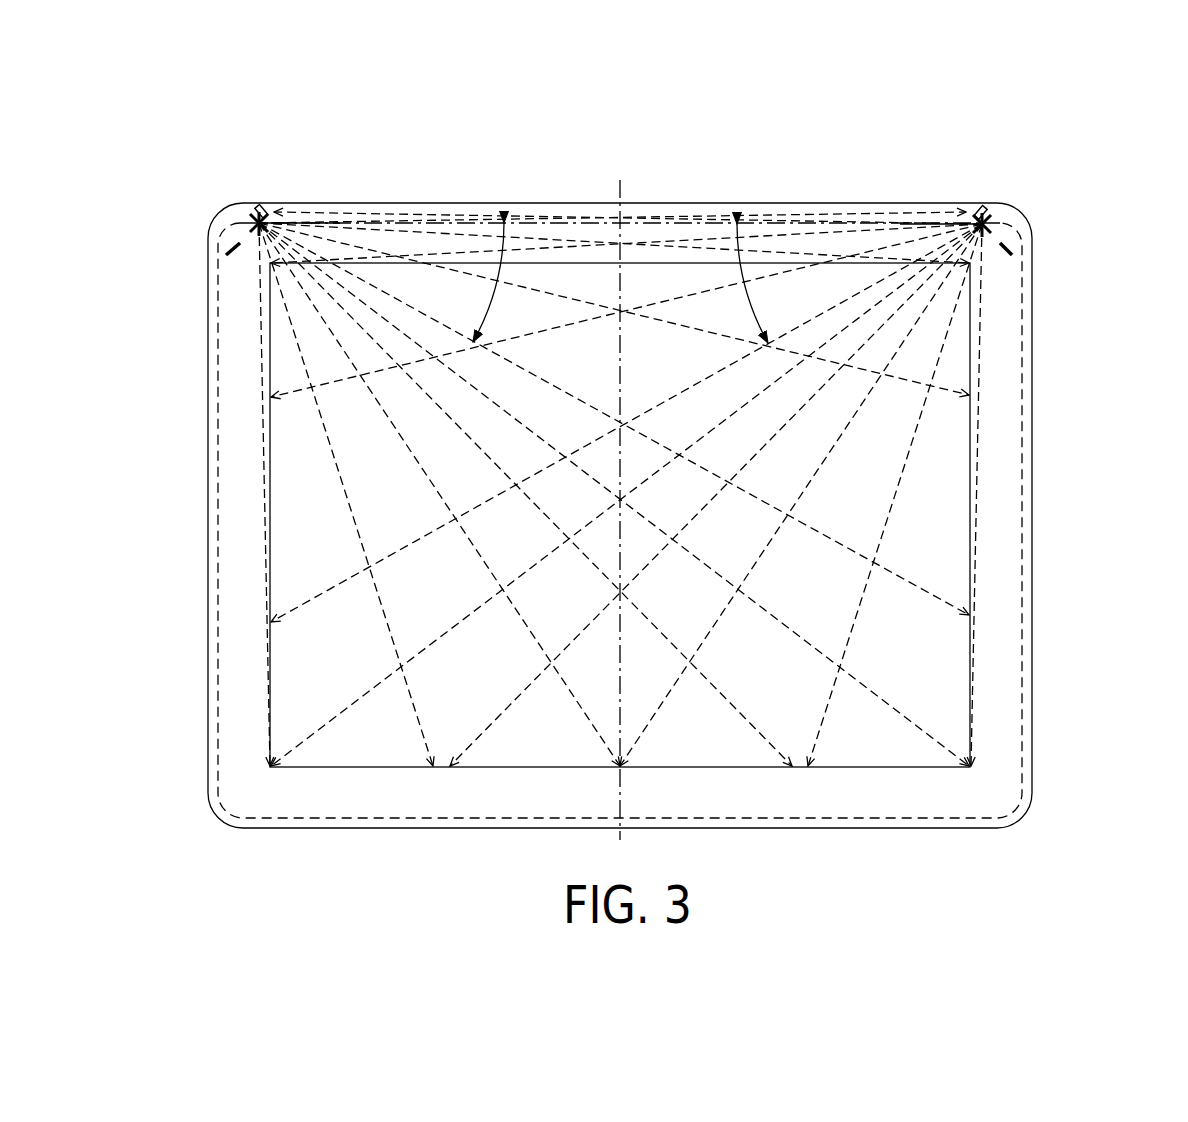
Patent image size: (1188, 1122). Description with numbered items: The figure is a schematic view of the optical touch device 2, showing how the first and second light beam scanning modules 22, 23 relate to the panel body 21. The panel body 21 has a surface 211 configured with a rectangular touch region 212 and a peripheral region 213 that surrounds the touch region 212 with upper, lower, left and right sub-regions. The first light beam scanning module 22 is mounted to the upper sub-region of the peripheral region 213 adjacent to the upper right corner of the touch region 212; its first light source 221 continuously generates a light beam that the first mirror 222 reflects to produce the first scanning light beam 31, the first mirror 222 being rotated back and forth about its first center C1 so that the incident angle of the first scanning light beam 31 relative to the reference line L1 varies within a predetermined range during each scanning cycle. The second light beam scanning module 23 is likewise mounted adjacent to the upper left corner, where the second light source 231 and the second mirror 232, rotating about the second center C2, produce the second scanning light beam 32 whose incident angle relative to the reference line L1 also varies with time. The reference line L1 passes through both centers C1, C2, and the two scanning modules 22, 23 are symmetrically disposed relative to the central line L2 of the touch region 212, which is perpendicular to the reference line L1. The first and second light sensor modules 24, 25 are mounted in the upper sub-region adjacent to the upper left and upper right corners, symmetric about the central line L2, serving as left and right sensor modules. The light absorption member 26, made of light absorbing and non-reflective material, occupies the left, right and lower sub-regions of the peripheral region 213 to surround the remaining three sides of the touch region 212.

The optical touch device 2 is at (1184, 137).
The panel body 21 is at (1034, 482).
The surface 211 is at (1138, 698).
The touch region 212 is at (945, 715).
The peripheral region 213 is at (998, 687).
The first light beam scanning module 22 is at (948, 166).
The first light source 221 is at (937, 222).
The first mirror 222 is at (981, 219).
The second light beam scanning module 23 is at (310, 166).
The second light source 231 is at (305, 222).
The second mirror 232 is at (262, 218).
The first light sensor module 24 is at (228, 248).
The second light sensor module 25 is at (1013, 248).
The light absorption member 26 is at (1027, 517).
The first scanning light beam 31 is at (843, 302).
The second scanning light beam 32 is at (397, 298).
The first center C1 is at (990, 222).
The second center C2 is at (256, 220).
The reference line L1 is at (558, 220).
The central line L2 is at (621, 193).